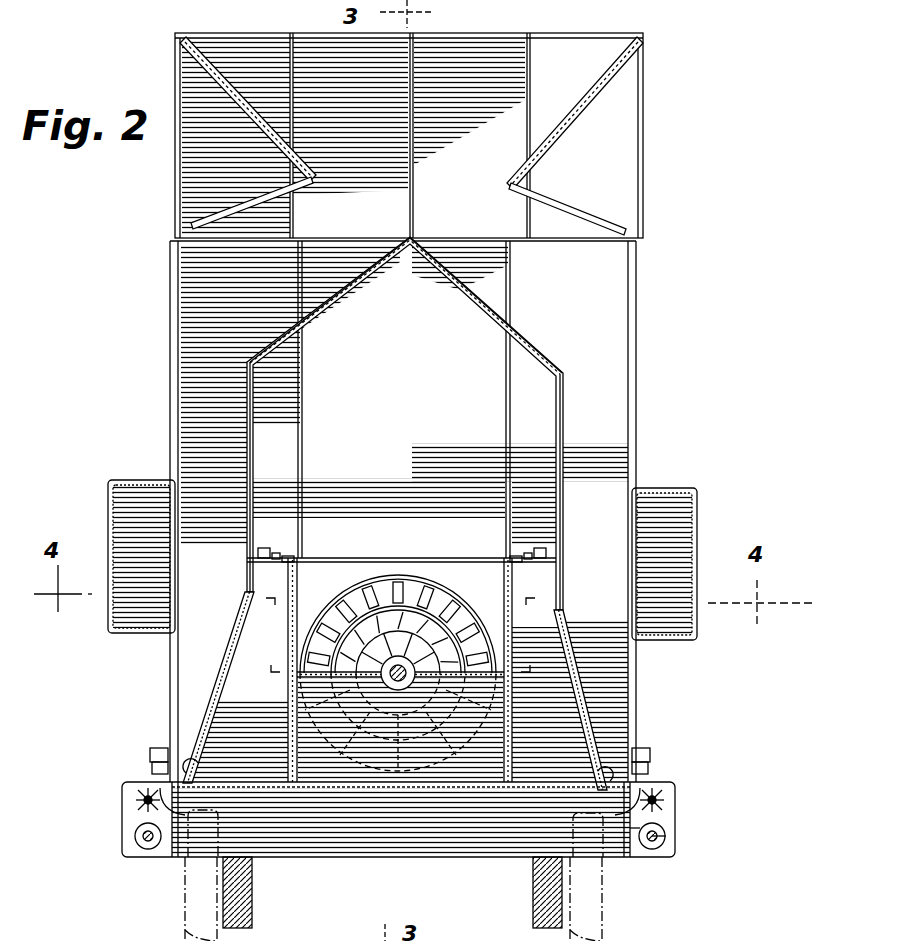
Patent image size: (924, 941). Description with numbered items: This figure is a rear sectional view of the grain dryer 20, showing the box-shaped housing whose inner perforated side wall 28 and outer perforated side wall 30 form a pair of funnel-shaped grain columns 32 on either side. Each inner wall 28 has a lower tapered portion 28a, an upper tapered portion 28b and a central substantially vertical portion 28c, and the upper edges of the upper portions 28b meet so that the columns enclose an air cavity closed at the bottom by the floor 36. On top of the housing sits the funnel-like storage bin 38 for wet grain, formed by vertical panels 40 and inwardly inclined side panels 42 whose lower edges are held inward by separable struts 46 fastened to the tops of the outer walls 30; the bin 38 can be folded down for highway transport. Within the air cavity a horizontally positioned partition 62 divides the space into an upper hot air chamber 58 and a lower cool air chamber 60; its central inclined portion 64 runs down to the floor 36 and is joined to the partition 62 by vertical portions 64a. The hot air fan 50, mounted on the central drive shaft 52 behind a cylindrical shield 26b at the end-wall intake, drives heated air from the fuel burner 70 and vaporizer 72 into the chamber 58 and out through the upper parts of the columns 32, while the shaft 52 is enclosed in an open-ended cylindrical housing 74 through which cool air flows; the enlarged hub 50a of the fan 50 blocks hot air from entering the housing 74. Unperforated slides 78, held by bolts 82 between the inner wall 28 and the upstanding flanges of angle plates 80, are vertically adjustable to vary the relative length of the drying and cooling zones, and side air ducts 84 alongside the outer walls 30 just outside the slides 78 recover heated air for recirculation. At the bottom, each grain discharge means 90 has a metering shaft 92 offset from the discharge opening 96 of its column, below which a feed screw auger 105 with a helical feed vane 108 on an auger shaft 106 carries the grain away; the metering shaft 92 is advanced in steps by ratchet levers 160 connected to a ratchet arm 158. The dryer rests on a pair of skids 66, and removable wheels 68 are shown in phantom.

The grain dryer 20 is at (88, 225).
The cylindrical shield 26b is at (350, 583).
The inner perforated side wall 28 is at (395, 513).
The lower tapered portion 28a is at (214, 720).
The upper tapered portion 28b is at (303, 328).
The central substantially vertical portion 28c is at (254, 450).
The outer perforated side wall 30 is at (175, 397).
The grain column 32 is at (229, 351).
The floor 36 is at (372, 790).
The storage bin 38 is at (411, 121).
The vertical panel 40 is at (510, 48).
The side panel 42 is at (203, 64).
The strut 46 is at (223, 208).
The hot air fan 50 is at (400, 607).
The enlarged hub 50a is at (447, 597).
The drive shaft 52 is at (343, 612).
The hot air chamber 58 is at (421, 391).
The cool air chamber 60 is at (262, 765).
The horizontally positioned partition 62 is at (403, 670).
The central inclined portion 64 is at (297, 692).
The vertical portion 64a is at (297, 622).
The skid 66 is at (253, 893).
The removable wheel 68 is at (185, 895).
The fuel burner 70 is at (422, 645).
The vaporizer 72 is at (442, 592).
The cylindrical housing 74 is at (390, 637).
The slide 78 is at (254, 543).
The angle plate 80 is at (284, 553).
The bolt 82 is at (263, 548).
The side air duct 84 is at (112, 483).
The grain discharge means 90 is at (126, 800).
The metering shaft 92 is at (132, 782).
The discharge opening 96 is at (192, 776).
The feed screw auger 105 is at (654, 848).
The auger shaft 106 is at (136, 838).
The helical feed vane 108 is at (664, 832).
The ratchet arm 158 is at (153, 763).
The ratchet lever 160 is at (150, 752).